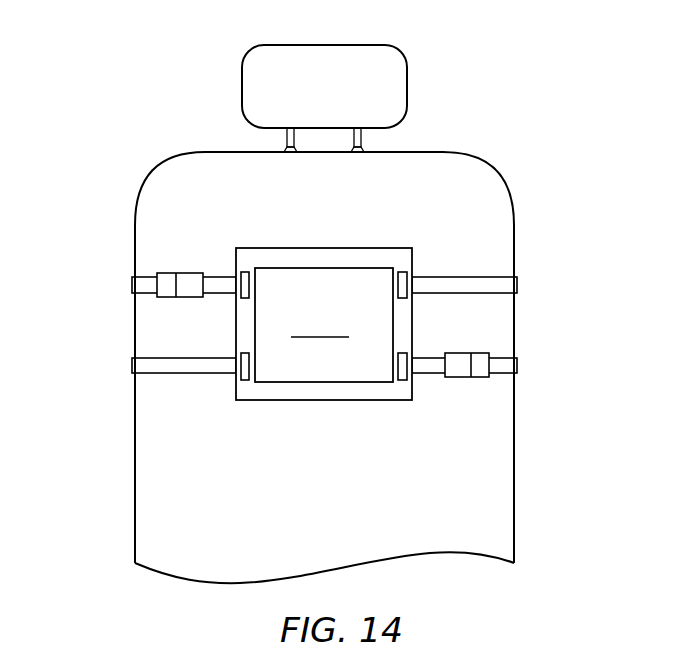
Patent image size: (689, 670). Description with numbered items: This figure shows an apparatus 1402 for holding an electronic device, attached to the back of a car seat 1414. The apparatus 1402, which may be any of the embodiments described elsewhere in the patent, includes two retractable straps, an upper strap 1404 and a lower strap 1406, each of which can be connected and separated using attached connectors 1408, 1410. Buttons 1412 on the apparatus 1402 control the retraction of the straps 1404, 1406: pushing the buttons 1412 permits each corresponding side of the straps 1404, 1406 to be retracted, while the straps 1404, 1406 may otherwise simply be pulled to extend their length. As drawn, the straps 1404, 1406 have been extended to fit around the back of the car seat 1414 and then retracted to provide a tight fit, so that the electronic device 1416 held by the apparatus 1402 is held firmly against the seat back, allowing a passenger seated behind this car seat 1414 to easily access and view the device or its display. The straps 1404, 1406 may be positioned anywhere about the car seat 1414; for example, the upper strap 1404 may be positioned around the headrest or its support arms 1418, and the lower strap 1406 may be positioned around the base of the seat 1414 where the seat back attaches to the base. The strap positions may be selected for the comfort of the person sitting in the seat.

The apparatus 1402 is at (348, 400).
The upper strap 1404 is at (493, 277).
The lower strap 1406 is at (157, 358).
The connector 1408 is at (190, 273).
The connector 1410 is at (480, 353).
The buttons 1412 is at (401, 272).
The car seat 1414 is at (433, 152).
The electronic device 1416 is at (242, 67).
The support arms 1418 is at (286, 138).